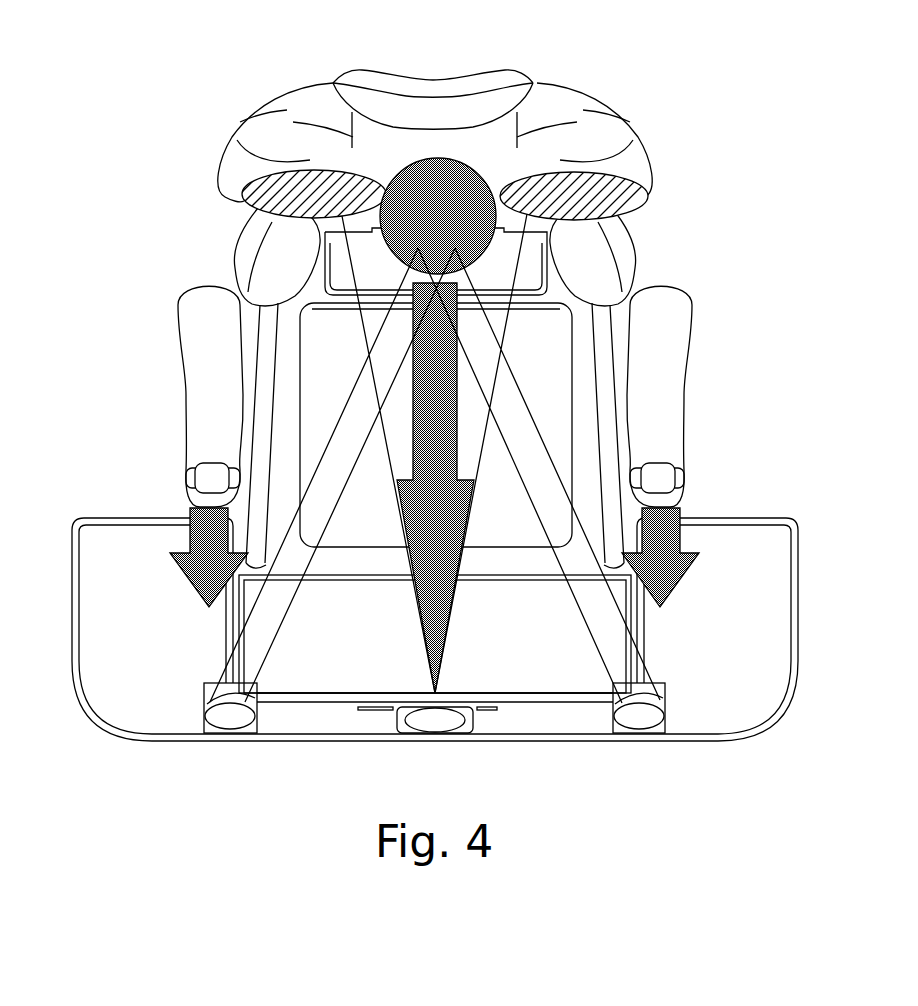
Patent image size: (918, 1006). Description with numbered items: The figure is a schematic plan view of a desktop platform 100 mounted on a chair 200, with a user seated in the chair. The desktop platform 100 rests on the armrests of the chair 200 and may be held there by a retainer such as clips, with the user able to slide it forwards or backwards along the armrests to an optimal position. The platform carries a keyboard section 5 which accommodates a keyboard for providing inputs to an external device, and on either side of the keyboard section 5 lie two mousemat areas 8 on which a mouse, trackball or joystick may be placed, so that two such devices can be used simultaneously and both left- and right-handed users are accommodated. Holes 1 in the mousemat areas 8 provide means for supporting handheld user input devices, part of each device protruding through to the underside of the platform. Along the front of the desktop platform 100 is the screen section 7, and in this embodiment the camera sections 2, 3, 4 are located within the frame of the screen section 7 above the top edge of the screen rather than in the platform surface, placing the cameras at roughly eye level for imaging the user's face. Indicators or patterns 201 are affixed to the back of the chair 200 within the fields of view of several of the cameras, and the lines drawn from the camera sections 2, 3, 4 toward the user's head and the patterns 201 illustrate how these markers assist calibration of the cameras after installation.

The desktop platform 100 is at (158, 713).
The chair 200 is at (632, 137).
The indicators or patterns 201 is at (242, 200).
The holes 1 is at (132, 711).
The camera section 2 is at (639, 735).
The camera section 3 is at (427, 747).
The camera section 4 is at (230, 735).
The keyboard section 5 is at (374, 638).
The screen section 7 is at (555, 731).
The mousemat areas 8 is at (134, 609).